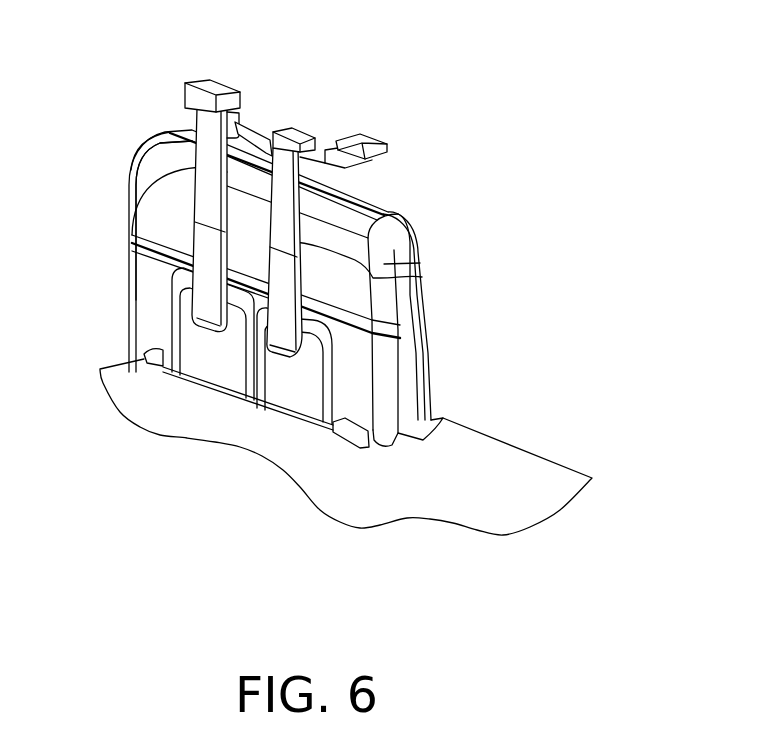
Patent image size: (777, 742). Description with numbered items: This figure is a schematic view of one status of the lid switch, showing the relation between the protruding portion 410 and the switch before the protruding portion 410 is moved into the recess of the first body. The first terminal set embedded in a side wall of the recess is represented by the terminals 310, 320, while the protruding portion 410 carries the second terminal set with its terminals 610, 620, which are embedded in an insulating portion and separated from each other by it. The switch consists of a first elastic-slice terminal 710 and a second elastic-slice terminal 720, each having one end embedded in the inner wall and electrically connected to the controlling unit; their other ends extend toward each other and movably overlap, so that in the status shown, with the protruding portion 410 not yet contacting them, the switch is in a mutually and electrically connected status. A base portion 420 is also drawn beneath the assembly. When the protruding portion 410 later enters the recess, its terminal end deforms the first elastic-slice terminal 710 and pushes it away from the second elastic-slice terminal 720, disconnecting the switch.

The terminal 310 is at (398, 280).
The terminal 320 is at (133, 233).
The protruding portion 410 is at (152, 142).
The base plate 420 is at (530, 503).
The terminal 610 is at (223, 363).
The terminal 620 is at (285, 407).
The first elastic-slice terminal 710 is at (255, 130).
The second elastic-slice terminal 720 is at (360, 140).